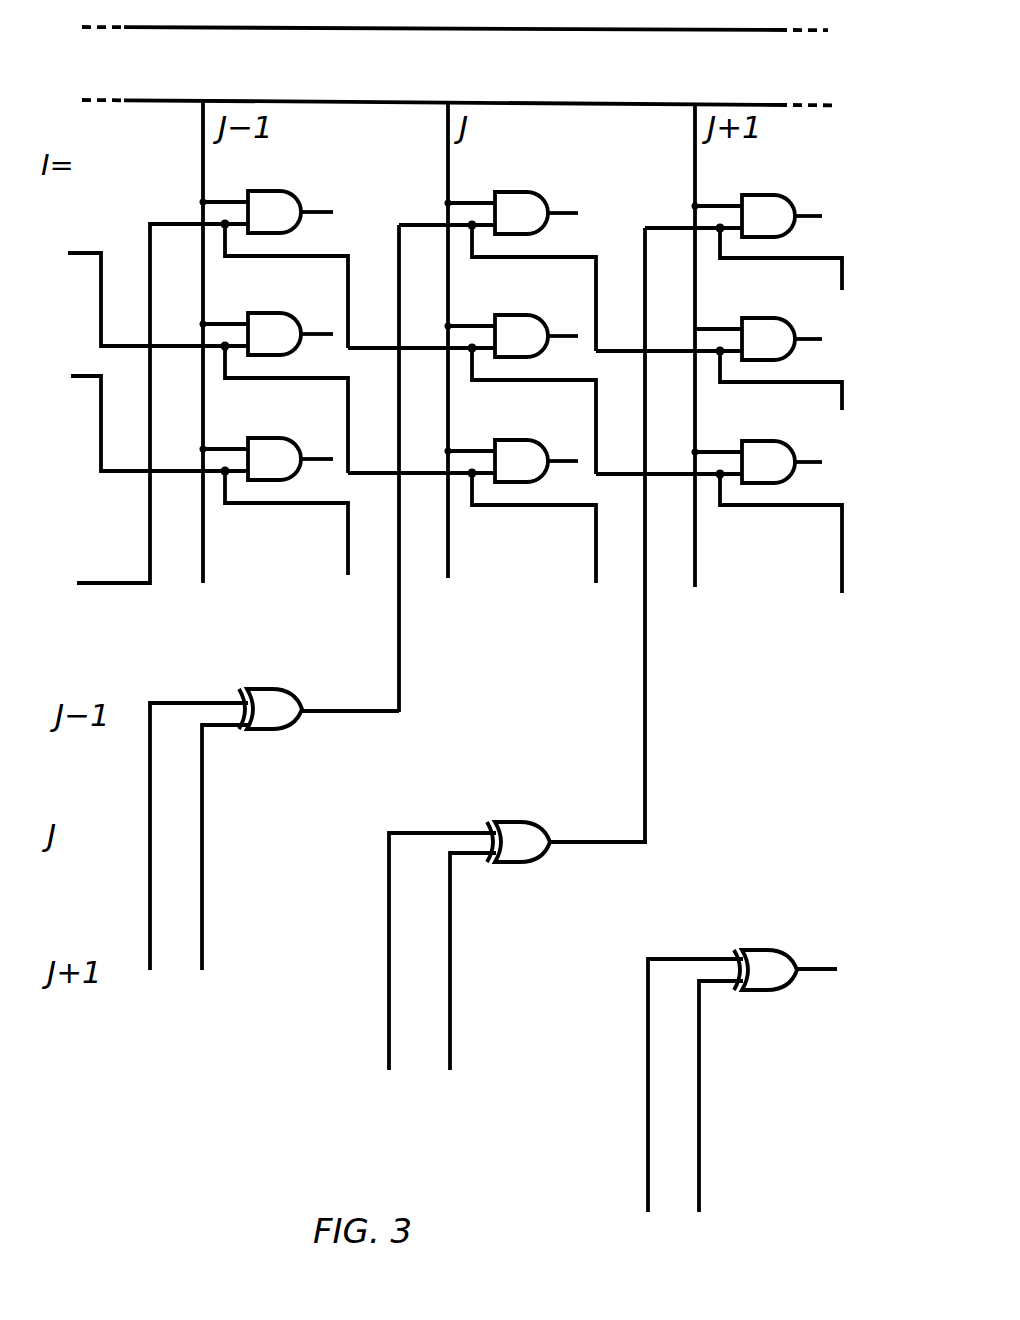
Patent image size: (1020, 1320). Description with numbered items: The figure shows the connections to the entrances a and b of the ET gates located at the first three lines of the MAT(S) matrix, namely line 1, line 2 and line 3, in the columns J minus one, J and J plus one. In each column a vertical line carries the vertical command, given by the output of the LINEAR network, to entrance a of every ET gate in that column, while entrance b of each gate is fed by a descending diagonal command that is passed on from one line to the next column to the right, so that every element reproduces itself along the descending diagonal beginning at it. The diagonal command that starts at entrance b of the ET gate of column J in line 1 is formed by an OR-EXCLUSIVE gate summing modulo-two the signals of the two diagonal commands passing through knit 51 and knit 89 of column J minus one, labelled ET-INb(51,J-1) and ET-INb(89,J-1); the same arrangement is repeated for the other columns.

The knit 89 of the left column 89 is at (448, 619).
The knit 51 of the left column 51 is at (427, 957).
The first line of the MAT(S) matrix 1 is at (149, 397).
The second line of the MAT(S) matrix 2 is at (149, 302).
The third line of the MAT(S) matrix 3 is at (149, 427).